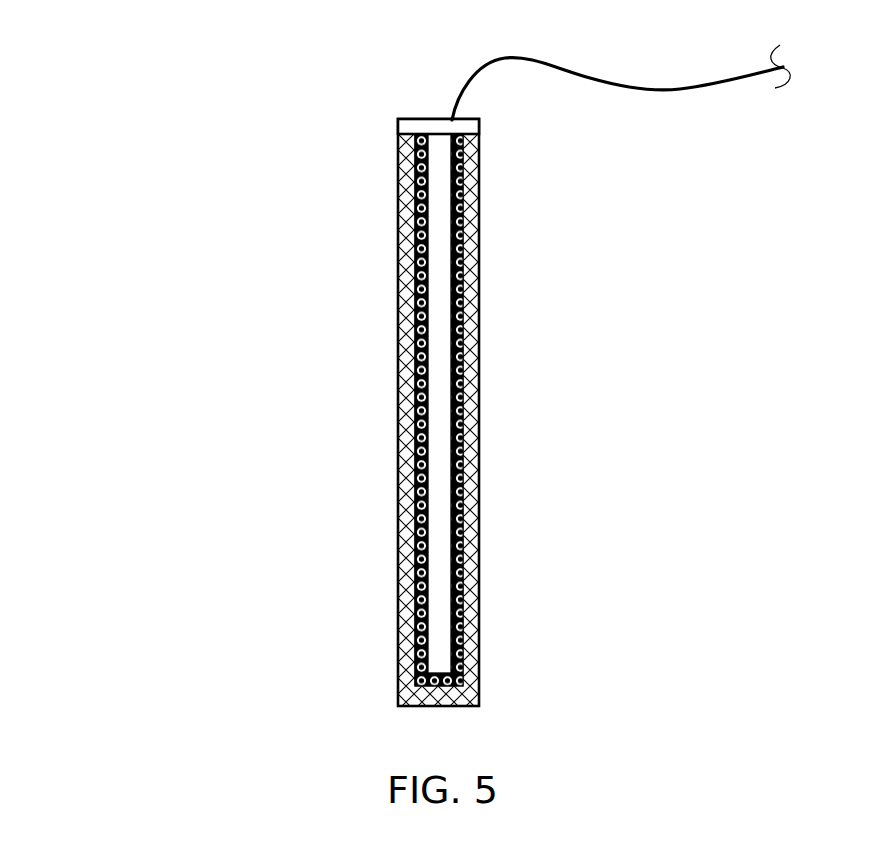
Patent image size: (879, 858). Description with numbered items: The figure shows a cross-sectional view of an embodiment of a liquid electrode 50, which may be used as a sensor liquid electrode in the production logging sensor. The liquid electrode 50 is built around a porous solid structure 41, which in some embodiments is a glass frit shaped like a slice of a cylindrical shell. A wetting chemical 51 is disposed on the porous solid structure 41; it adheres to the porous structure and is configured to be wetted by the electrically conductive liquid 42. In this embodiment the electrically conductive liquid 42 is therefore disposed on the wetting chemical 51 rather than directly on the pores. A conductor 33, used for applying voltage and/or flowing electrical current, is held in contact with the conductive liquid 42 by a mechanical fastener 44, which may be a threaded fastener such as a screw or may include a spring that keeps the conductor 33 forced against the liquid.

The conductor 33 is at (476, 72).
The porous solid structure 41 is at (440, 260).
The electrically conductive liquid 42 is at (465, 310).
The mechanical fastener 44 is at (473, 125).
The liquid electrode 50 is at (419, 369).
The wetting chemical 51 is at (463, 402).